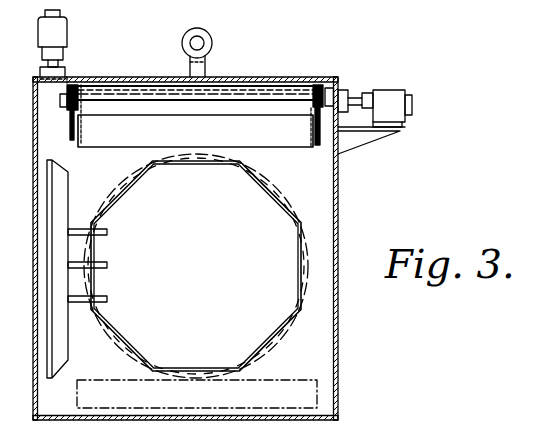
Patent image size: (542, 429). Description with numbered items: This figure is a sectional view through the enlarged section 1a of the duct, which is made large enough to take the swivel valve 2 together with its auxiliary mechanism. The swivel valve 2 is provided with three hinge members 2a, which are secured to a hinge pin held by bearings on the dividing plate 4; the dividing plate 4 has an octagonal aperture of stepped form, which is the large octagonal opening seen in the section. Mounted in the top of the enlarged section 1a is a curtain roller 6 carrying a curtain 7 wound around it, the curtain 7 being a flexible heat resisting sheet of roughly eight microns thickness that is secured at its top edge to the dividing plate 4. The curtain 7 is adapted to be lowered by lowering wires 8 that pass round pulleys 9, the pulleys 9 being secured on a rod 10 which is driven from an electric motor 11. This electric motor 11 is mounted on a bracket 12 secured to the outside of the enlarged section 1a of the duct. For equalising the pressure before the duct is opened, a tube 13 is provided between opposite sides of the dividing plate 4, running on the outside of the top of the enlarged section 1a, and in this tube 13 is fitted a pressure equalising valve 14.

The enlarged section 1a is at (338, 213).
The swivel valve 2 is at (63, 197).
The hinge members 2a is at (105, 298).
The dividing plate 4 is at (325, 337).
The curtain roller 6 is at (292, 144).
The curtain 7 is at (85, 114).
The lowering wires 8 is at (316, 110).
The pulleys 9 is at (322, 85).
The rod 10 is at (273, 100).
The electric motor 11 is at (392, 95).
The bracket 12 is at (388, 130).
The tube 13 is at (193, 65).
The pressure equalising valve 14 is at (209, 40).